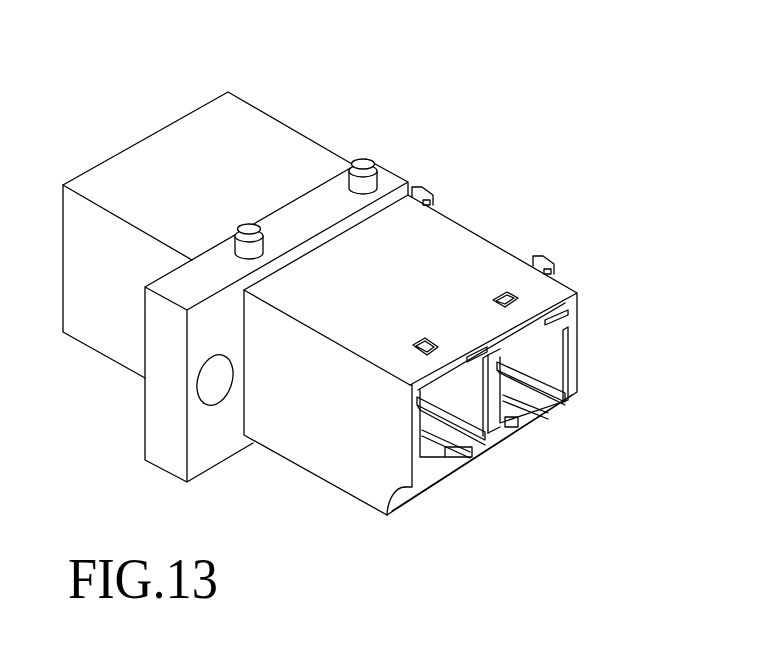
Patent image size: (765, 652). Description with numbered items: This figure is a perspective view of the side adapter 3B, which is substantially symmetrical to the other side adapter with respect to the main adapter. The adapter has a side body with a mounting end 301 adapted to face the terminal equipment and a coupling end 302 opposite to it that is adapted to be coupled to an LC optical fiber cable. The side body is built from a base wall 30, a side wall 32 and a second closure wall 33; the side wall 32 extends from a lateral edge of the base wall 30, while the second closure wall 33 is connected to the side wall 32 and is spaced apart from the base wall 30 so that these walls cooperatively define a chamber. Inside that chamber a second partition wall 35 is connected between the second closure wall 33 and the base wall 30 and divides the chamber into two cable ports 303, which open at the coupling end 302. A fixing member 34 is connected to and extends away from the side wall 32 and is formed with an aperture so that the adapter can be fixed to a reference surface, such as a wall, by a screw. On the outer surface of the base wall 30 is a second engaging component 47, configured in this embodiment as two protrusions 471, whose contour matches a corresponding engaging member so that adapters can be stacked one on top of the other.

The side adapter 3B is at (559, 142).
The mounting end 301 is at (128, 106).
The side wall 32 is at (128, 358).
The second engaging component 47 is at (370, 130).
The protrusions 471 is at (349, 165).
The fixing member 34 is at (468, 140).
The base wall 30 is at (498, 253).
The coupling end 302 is at (612, 346).
The cable ports 303 is at (550, 425).
The second partition wall 35 is at (492, 436).
The second closure wall 33 is at (401, 509).